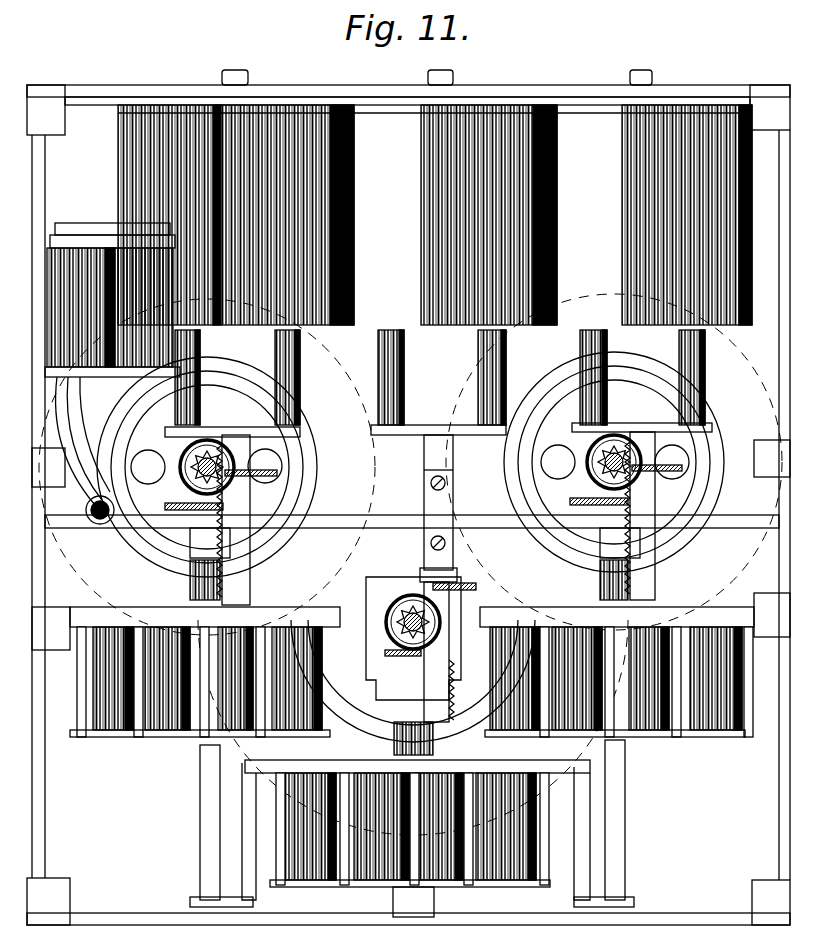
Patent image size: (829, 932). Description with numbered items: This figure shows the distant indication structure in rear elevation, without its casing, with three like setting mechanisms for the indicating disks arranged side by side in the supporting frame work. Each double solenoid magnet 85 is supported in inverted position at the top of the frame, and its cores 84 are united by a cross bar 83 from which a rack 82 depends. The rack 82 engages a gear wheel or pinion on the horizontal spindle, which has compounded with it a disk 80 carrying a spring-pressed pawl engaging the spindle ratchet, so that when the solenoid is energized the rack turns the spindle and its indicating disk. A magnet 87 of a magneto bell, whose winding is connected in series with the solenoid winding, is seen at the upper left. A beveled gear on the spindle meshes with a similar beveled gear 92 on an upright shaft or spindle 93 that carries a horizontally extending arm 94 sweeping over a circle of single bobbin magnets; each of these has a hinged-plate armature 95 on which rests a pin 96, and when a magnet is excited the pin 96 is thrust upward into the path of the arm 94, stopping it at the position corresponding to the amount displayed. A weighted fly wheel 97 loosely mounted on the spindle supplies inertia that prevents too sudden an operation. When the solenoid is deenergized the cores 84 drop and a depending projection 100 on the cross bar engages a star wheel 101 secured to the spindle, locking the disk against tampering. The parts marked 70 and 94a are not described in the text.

The gear wheel 70 is at (193, 457).
The disk 80 is at (398, 605).
The rack 82 is at (238, 500).
The cross bar 83 is at (253, 427).
The cores 84 is at (200, 350).
The double solenoid magnet 85 is at (180, 117).
The magnet of a magneto bell 87 is at (80, 247).
The beveled gear 92 is at (155, 607).
The upright shaft or spindle 93 is at (205, 792).
The horizontally extending arm 94 is at (163, 620).
The small roller 94a is at (167, 484).
The armature 95 is at (153, 743).
The pin 96 is at (84, 627).
The weighted fly wheel 97 is at (316, 473).
The depending projection 100 is at (630, 425).
The star wheel 101 is at (187, 490).